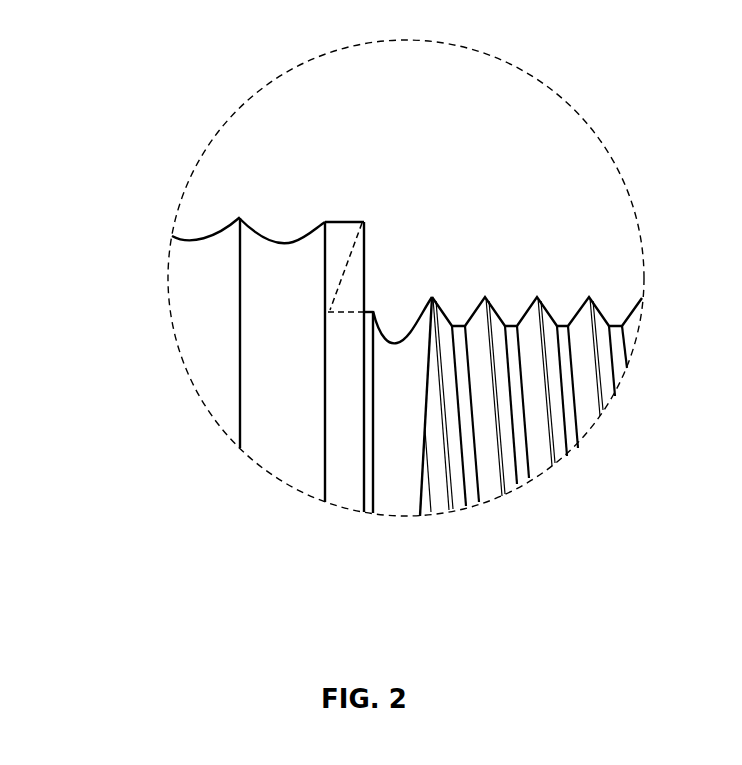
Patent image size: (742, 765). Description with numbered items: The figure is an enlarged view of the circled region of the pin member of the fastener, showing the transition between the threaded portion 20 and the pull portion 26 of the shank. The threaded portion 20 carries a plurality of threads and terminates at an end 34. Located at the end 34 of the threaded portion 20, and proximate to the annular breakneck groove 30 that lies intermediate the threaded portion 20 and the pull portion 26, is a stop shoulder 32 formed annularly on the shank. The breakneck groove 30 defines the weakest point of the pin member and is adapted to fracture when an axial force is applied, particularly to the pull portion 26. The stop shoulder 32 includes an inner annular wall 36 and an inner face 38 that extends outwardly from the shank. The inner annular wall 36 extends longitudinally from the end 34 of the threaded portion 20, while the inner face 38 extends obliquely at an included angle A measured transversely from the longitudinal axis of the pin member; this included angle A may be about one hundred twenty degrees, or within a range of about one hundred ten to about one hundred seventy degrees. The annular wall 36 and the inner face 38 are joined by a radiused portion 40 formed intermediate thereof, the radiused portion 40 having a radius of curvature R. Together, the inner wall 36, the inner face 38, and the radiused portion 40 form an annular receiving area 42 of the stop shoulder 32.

The threaded portion 20 is at (278, 415).
The pull portion 26 is at (517, 402).
The breakneck groove 30 is at (390, 467).
The stop shoulder 32 is at (361, 222).
The end 34 is at (325, 222).
The inner annular wall 36 is at (371, 312).
The inner face 38 is at (343, 260).
The radiused portion 40 is at (340, 300).
The annular receiving area 42 is at (348, 290).
The included angle A is at (353, 232).
The radius of curvature R is at (337, 311).